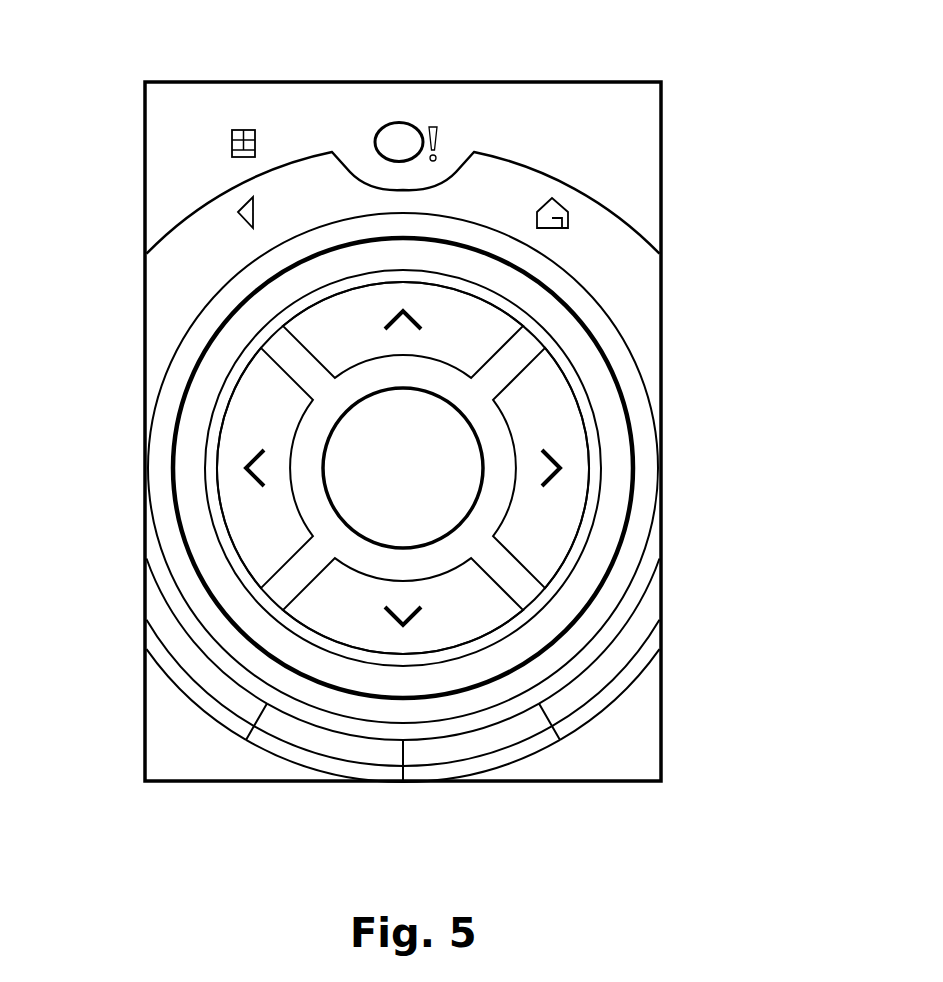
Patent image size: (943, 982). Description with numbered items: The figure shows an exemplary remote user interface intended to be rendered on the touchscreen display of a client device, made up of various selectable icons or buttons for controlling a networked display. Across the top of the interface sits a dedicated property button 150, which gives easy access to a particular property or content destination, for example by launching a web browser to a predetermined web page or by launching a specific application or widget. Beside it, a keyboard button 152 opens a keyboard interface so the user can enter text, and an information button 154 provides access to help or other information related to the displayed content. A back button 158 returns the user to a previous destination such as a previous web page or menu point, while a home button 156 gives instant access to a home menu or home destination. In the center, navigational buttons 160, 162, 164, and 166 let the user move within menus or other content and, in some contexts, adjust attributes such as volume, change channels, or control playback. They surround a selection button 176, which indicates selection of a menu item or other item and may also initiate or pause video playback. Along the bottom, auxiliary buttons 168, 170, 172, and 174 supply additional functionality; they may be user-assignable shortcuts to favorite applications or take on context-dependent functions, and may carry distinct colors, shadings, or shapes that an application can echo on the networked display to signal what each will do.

The dedicated property button 150 is at (408, 116).
The keyboard button 152 is at (232, 135).
The information button 154 is at (574, 132).
The home button 156 is at (566, 217).
The back button 158 is at (239, 212).
The navigational button 160 is at (497, 326).
The navigational button 162 is at (555, 408).
The navigational button 164 is at (253, 440).
The navigational button 166 is at (318, 598).
The auxiliary button 168 is at (195, 680).
The auxiliary button 170 is at (338, 747).
The auxiliary button 172 is at (467, 745).
The auxiliary button 174 is at (605, 665).
The selection button 176 is at (447, 482).